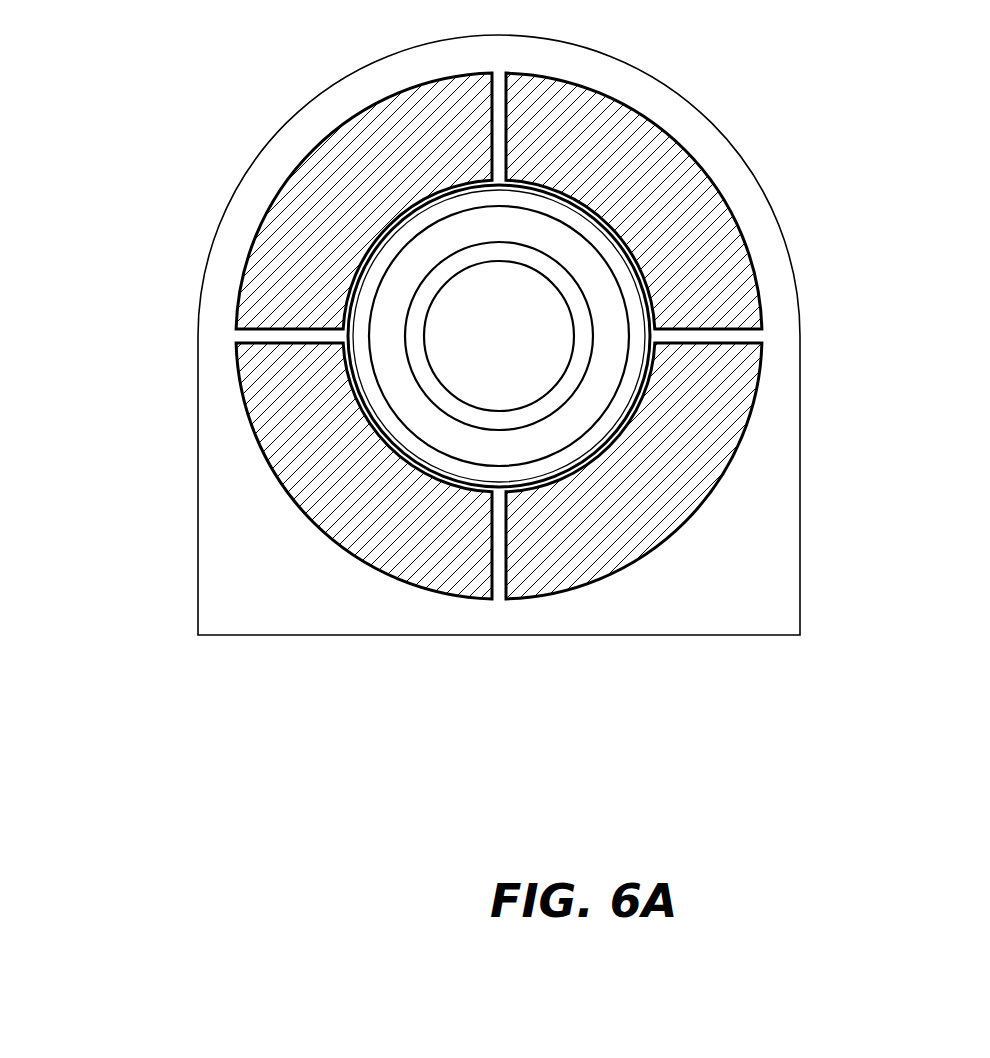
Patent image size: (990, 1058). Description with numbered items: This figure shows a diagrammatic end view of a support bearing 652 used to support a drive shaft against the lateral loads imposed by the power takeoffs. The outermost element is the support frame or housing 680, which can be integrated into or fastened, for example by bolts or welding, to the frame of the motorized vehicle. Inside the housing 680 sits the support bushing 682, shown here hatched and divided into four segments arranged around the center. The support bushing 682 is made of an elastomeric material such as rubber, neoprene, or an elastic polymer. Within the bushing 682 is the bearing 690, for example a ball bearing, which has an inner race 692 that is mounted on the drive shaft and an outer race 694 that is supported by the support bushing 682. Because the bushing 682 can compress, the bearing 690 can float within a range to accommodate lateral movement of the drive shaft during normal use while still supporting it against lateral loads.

The support bearing 652 is at (827, 111).
The support frame or housing 680 is at (742, 564).
The support bushing 682 is at (690, 432).
The bearing 690 is at (397, 287).
The inner race 692 is at (578, 310).
The outer race 694 is at (638, 336).